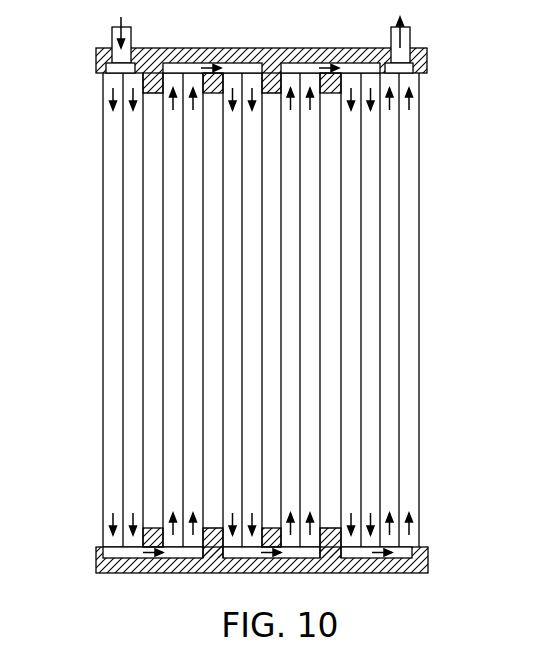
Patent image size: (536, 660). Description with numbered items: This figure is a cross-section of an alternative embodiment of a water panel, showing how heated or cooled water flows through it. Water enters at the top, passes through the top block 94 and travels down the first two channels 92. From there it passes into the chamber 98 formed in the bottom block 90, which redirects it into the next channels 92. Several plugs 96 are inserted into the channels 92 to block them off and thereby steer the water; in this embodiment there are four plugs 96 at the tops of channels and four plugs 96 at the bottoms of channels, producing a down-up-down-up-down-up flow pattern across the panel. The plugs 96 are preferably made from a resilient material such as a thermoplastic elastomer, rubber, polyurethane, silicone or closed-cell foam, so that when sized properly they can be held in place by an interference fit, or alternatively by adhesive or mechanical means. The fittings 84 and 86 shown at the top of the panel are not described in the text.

The inlet 84 is at (112, 50).
The outlet 86 is at (409, 31).
The bottom block 90 is at (423, 562).
The channels 92 is at (112, 262).
The top block 94 is at (357, 52).
The plugs 96 is at (147, 86).
The chamber 98 is at (178, 63).